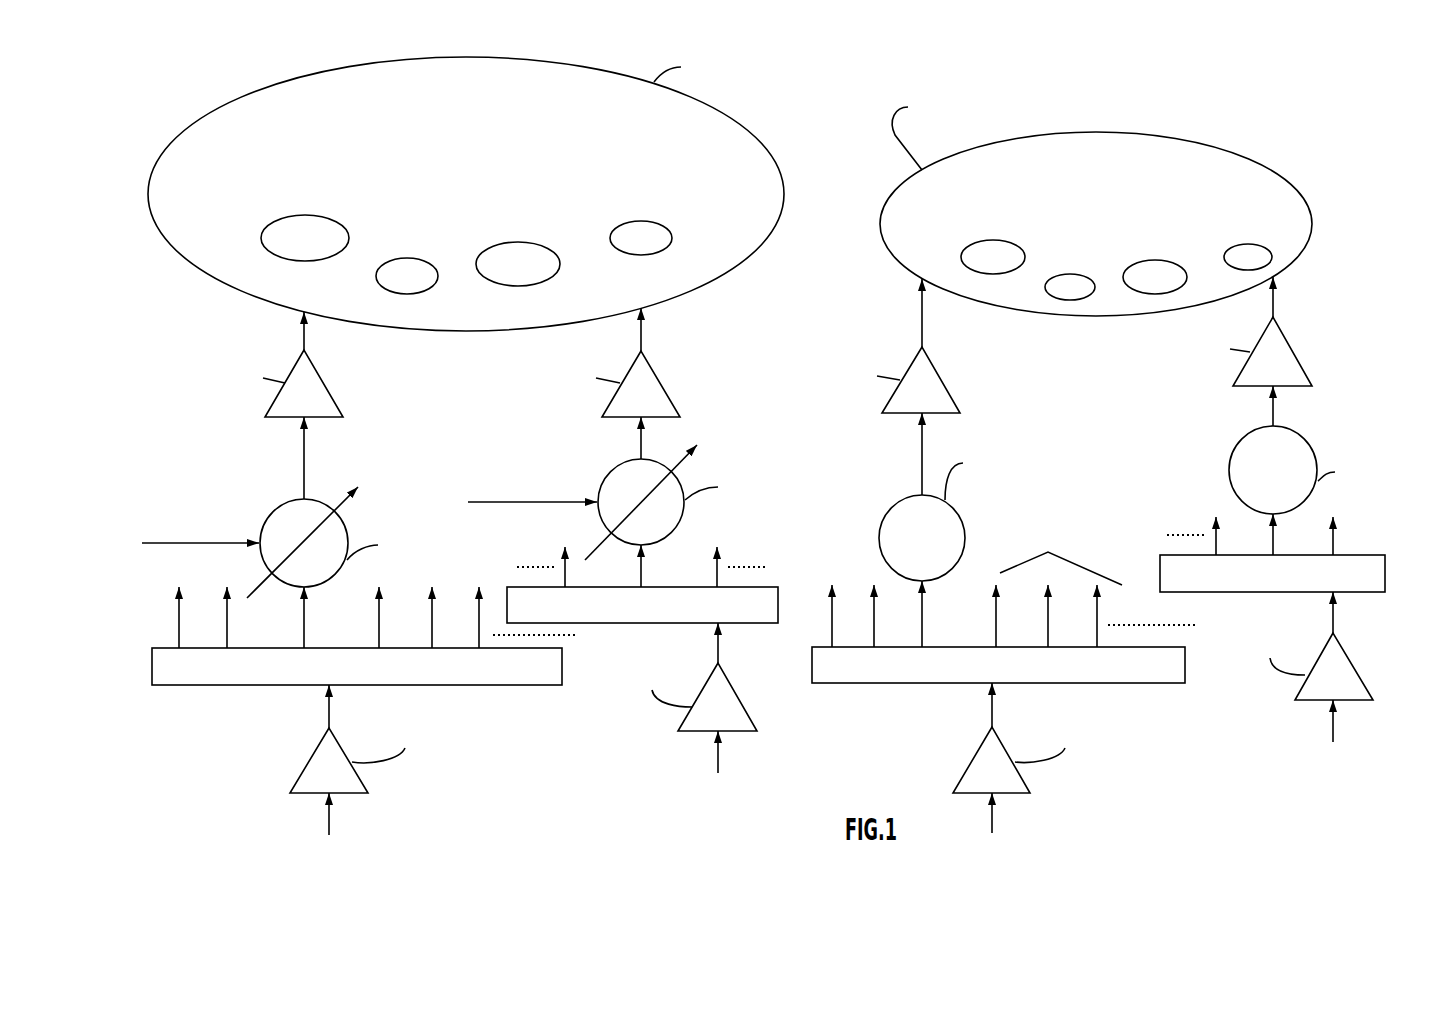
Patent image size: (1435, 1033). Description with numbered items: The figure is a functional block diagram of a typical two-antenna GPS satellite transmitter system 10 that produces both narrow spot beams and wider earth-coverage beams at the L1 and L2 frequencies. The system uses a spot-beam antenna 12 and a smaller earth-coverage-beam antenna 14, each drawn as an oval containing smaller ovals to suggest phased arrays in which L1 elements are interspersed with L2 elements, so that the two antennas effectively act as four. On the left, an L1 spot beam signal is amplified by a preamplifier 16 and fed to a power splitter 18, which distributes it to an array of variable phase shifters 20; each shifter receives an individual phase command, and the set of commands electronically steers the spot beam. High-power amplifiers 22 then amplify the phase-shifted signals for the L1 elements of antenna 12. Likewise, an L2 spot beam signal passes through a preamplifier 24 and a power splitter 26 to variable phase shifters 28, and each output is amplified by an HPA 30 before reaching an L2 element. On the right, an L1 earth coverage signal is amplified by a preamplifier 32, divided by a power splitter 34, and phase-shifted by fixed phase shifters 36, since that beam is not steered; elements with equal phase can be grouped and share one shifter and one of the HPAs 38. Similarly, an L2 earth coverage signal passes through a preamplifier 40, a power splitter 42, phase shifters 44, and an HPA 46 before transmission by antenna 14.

The GPS satellite transmitter system 10 is at (1290, 72).
The spot-beam antenna 12 is at (601, 68).
The earth-coverage-beam antenna 14 is at (1306, 203).
The preamplifier 16 is at (740, 698).
The power splitter 18 is at (748, 623).
The variable phase shifters 20 is at (684, 517).
The high-power amplifiers 22 is at (673, 398).
The preamplifier 24 is at (310, 760).
The power splitter 26 is at (527, 686).
The variable phase shifters 28 is at (279, 508).
The HPA 30 is at (335, 398).
The preamplifier 32 is at (1352, 666).
The power splitter 34 is at (1357, 555).
The fixed phase shifters 36 is at (1229, 470).
The HPAs 38 is at (1292, 353).
The preamplifier 40 is at (965, 770).
The power splitter 42 is at (1132, 683).
The phase shifters 44 is at (884, 524).
The HPA 46 is at (948, 396).